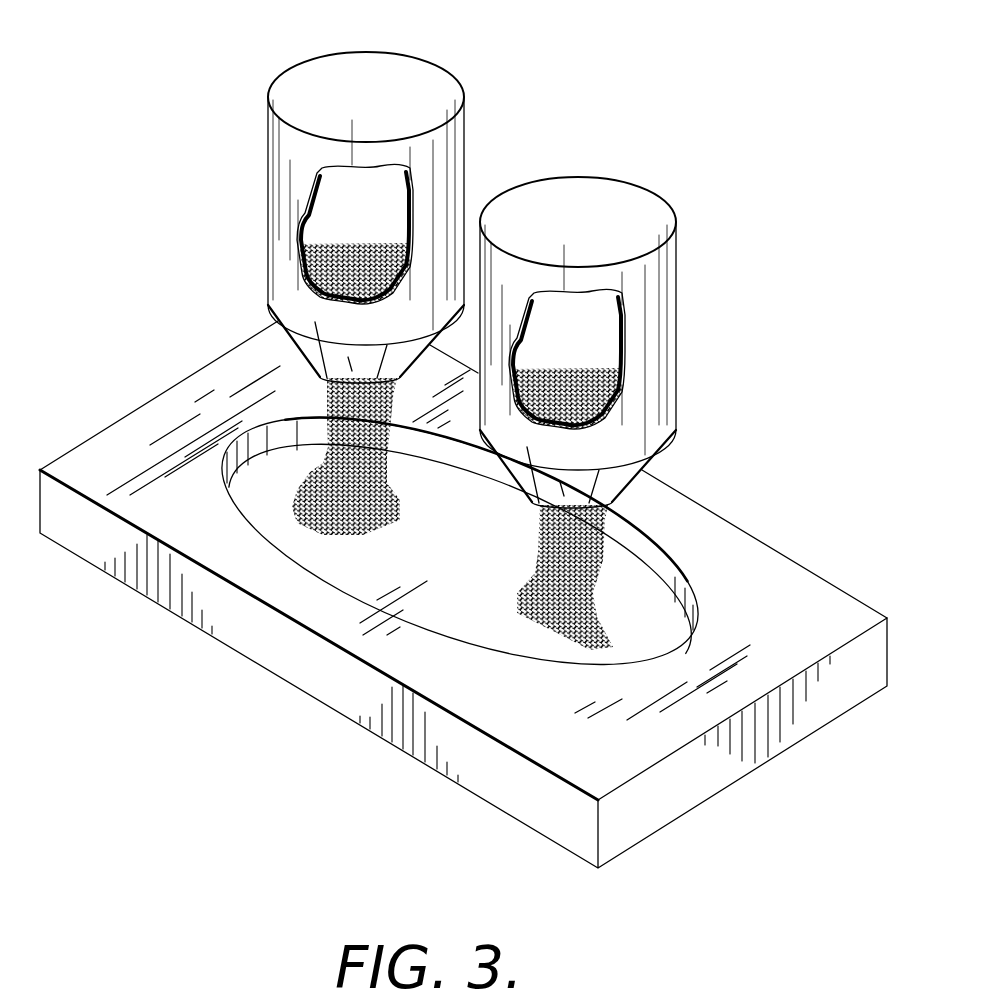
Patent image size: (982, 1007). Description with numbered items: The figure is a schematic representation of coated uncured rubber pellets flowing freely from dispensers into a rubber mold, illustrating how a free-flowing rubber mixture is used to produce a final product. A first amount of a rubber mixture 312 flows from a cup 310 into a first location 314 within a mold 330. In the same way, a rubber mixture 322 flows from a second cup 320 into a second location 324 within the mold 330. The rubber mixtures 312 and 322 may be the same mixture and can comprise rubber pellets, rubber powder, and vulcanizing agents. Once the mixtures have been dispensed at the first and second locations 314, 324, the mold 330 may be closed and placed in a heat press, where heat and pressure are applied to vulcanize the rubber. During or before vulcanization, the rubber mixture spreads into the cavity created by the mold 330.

The cup 310 is at (267, 133).
The rubber mixture 312 is at (301, 247).
The first location 314 is at (403, 512).
The cup 320 is at (690, 246).
The rubber mixture 322 is at (606, 402).
The second location 324 is at (513, 607).
The mold 330 is at (152, 410).